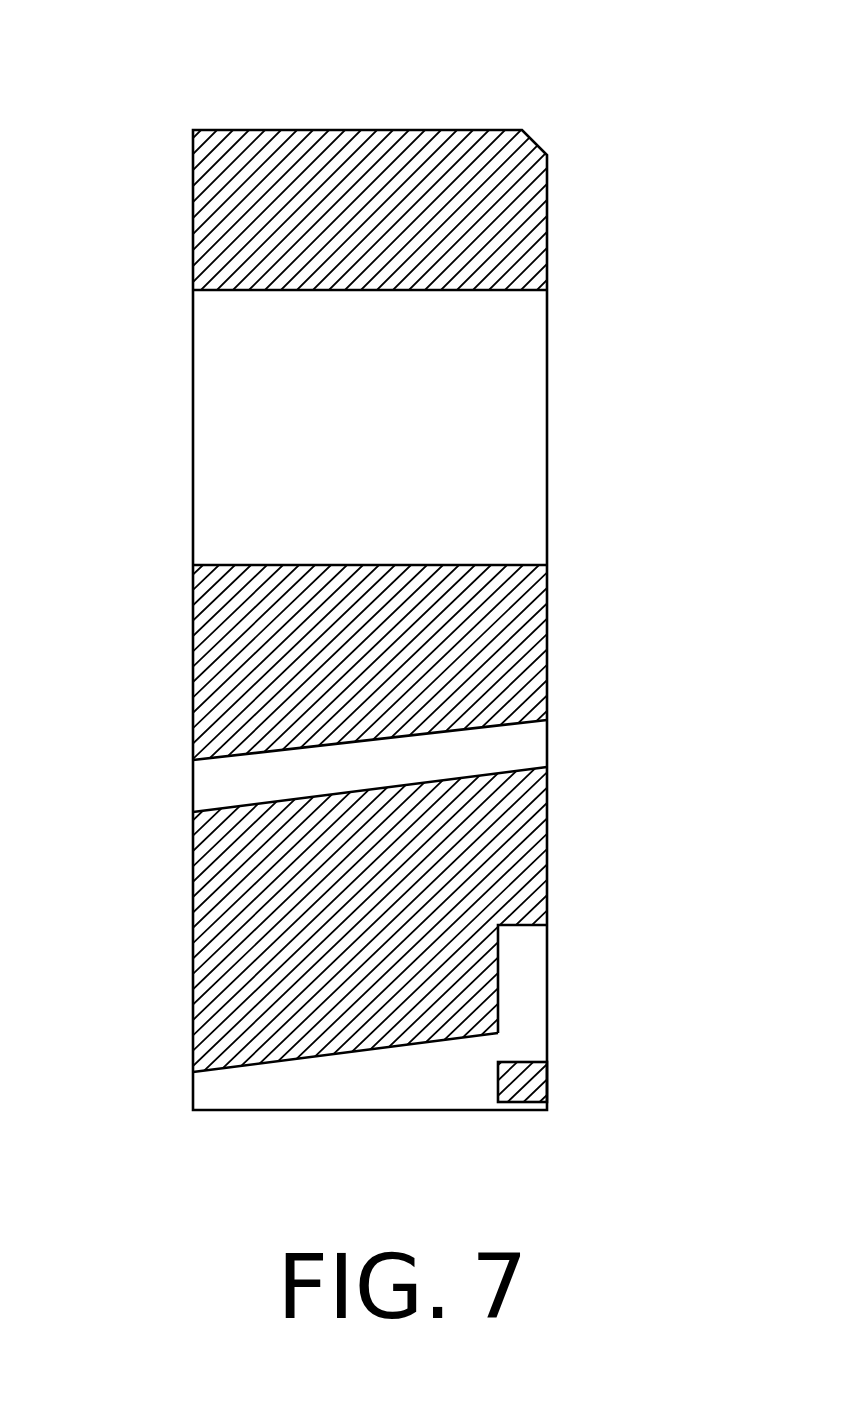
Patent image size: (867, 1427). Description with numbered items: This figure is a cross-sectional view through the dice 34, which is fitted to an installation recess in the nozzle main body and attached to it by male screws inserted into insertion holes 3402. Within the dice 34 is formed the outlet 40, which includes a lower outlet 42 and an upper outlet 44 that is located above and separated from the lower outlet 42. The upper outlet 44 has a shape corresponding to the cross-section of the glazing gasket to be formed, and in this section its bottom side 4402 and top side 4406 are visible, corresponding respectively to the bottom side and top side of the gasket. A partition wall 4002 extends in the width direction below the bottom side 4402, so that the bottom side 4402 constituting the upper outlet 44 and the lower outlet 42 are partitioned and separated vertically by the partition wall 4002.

The dice 34 is at (297, 118).
The insertion holes 3402 is at (505, 291).
The outlet 40 is at (163, 757).
The top side 4406 is at (206, 788).
The upper outlet 44 is at (452, 1064).
The bottom side 4402 is at (505, 1047).
The lower outlet 42 is at (528, 1108).
The partition wall 4002 is at (548, 1072).